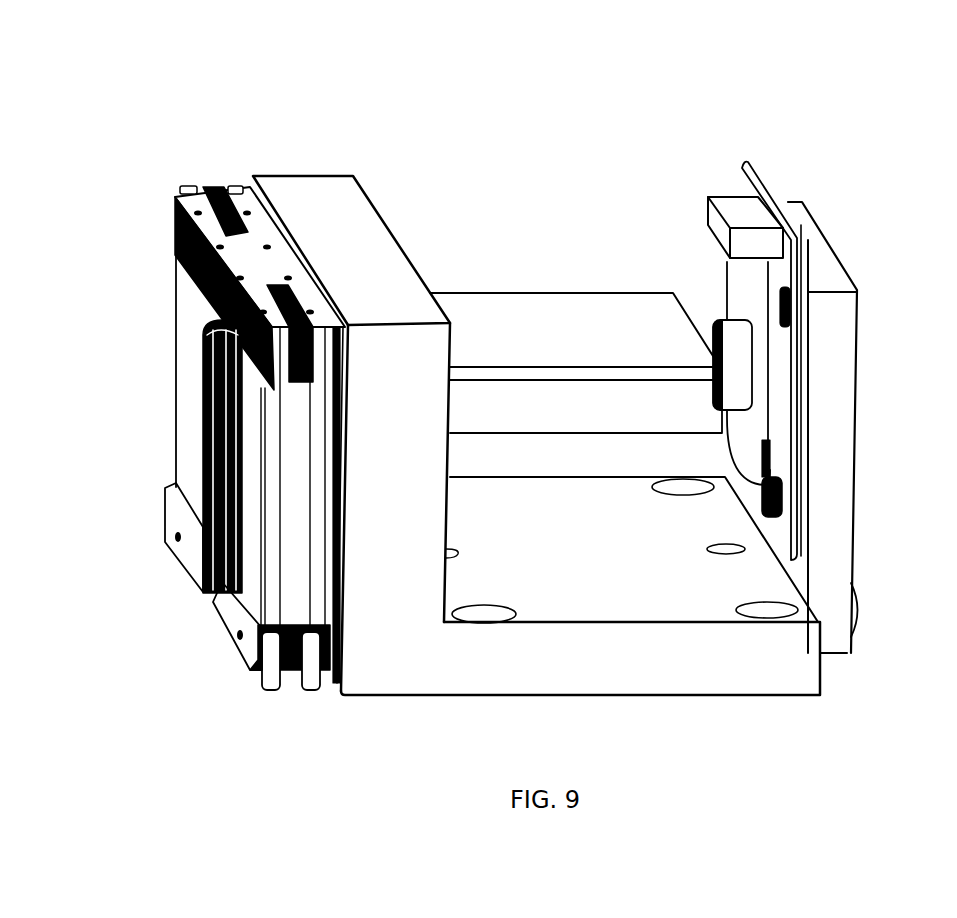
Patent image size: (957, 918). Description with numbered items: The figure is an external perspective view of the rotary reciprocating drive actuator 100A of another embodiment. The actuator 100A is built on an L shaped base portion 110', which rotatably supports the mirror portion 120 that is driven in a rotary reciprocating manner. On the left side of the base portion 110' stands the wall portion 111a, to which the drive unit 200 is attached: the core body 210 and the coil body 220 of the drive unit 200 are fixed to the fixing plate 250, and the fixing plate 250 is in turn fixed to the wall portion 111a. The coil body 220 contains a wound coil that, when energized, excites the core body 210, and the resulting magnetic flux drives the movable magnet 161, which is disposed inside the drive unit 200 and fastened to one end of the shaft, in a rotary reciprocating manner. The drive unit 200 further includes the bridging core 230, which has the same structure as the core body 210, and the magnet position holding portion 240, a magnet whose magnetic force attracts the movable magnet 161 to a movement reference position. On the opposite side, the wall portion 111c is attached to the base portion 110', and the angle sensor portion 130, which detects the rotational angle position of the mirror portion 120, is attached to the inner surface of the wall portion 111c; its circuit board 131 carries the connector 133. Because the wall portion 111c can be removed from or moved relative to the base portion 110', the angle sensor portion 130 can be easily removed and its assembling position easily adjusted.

The rotary reciprocating drive actuator 100A is at (893, 59).
The base portion 110' is at (594, 616).
The wall portion 111a is at (398, 600).
The wall portion 111c is at (837, 470).
The mirror portion 120 is at (542, 318).
The angle sensor portion 130 is at (818, 193).
The circuit board 131 is at (758, 186).
The connector 133 is at (727, 213).
The movable magnet 161 is at (213, 403).
The drive unit 200 is at (190, 633).
The core body 210 is at (190, 548).
The coil body 220 is at (197, 362).
The bridging core 230 is at (190, 186).
The magnet position holding portion 240 is at (210, 312).
The fixing plate 250 is at (333, 673).